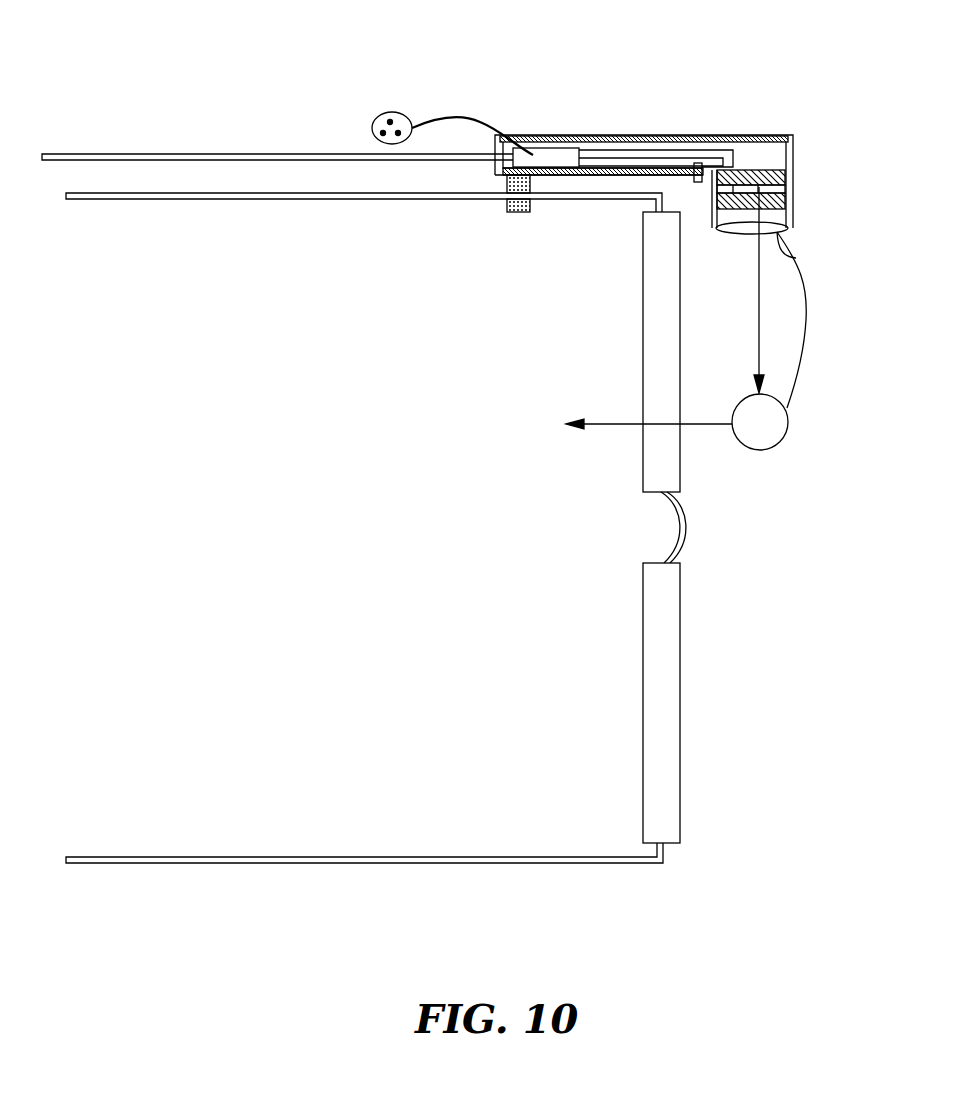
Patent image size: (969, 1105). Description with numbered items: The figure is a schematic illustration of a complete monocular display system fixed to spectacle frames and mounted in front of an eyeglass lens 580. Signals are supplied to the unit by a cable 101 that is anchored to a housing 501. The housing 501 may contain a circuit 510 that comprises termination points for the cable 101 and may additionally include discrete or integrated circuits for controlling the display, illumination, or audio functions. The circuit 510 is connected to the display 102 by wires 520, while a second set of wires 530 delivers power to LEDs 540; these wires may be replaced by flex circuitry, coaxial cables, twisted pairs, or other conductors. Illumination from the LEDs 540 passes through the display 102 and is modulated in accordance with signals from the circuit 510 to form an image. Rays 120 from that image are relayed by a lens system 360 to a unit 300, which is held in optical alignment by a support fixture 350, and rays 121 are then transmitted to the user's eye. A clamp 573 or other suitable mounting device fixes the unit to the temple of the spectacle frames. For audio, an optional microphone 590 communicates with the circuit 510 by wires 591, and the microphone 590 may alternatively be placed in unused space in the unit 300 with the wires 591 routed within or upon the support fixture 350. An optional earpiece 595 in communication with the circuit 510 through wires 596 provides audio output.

The cable 101 is at (130, 153).
The display 102 is at (793, 200).
The rays 120 is at (758, 315).
The rays 121 is at (612, 423).
The unit 300 is at (772, 438).
The support fixture 350 is at (806, 302).
The lens system 360 is at (796, 257).
The housing 501 is at (556, 135).
The circuit 510 is at (533, 153).
The wires 520 is at (618, 150).
The wires 530 is at (643, 155).
The LEDs 540 is at (796, 168).
The clamp 573 is at (512, 213).
The eyeglass lens 580 is at (657, 463).
The microphone 590 is at (698, 182).
The wires 591 is at (595, 160).
The earpiece 595 is at (373, 122).
The wires 596 is at (432, 120).